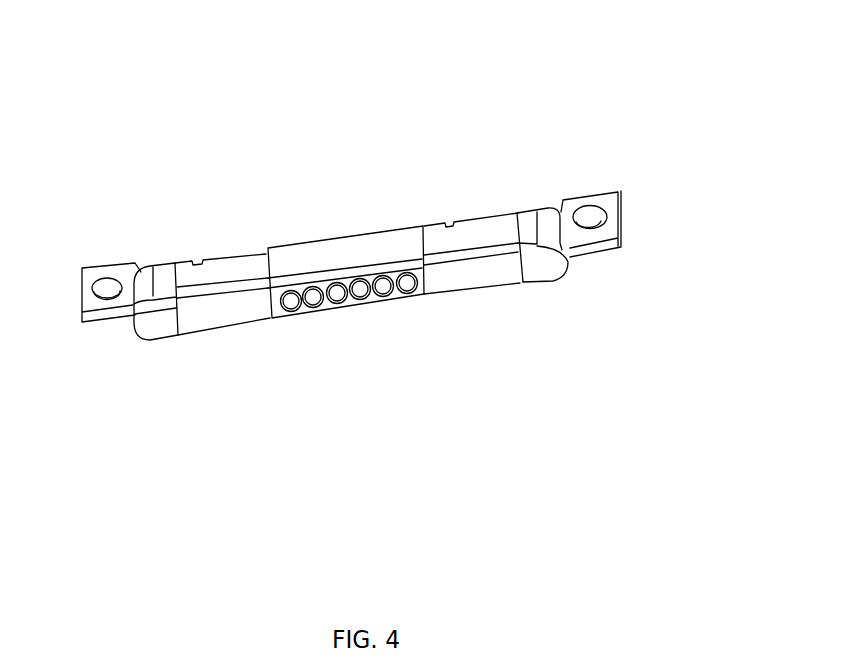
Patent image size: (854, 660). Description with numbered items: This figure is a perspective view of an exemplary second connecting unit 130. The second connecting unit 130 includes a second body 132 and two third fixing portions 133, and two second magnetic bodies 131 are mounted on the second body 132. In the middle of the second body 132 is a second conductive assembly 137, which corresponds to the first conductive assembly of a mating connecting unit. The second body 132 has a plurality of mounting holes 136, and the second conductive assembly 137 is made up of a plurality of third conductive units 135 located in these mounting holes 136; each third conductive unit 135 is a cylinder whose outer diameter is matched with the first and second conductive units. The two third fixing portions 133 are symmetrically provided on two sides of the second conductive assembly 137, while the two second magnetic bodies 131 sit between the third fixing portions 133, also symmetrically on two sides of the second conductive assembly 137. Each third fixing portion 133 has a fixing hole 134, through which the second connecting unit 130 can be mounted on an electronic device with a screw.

The second connecting unit 130 is at (112, 106).
The second magnetic body 131 is at (213, 313).
The second body 132 is at (538, 262).
The third fixing portion 133 is at (607, 203).
The fixing hole 134 is at (590, 218).
The third conductive unit 135 is at (290, 299).
The mounting hole 136 is at (268, 284).
The second conductive assembly 137 is at (428, 177).